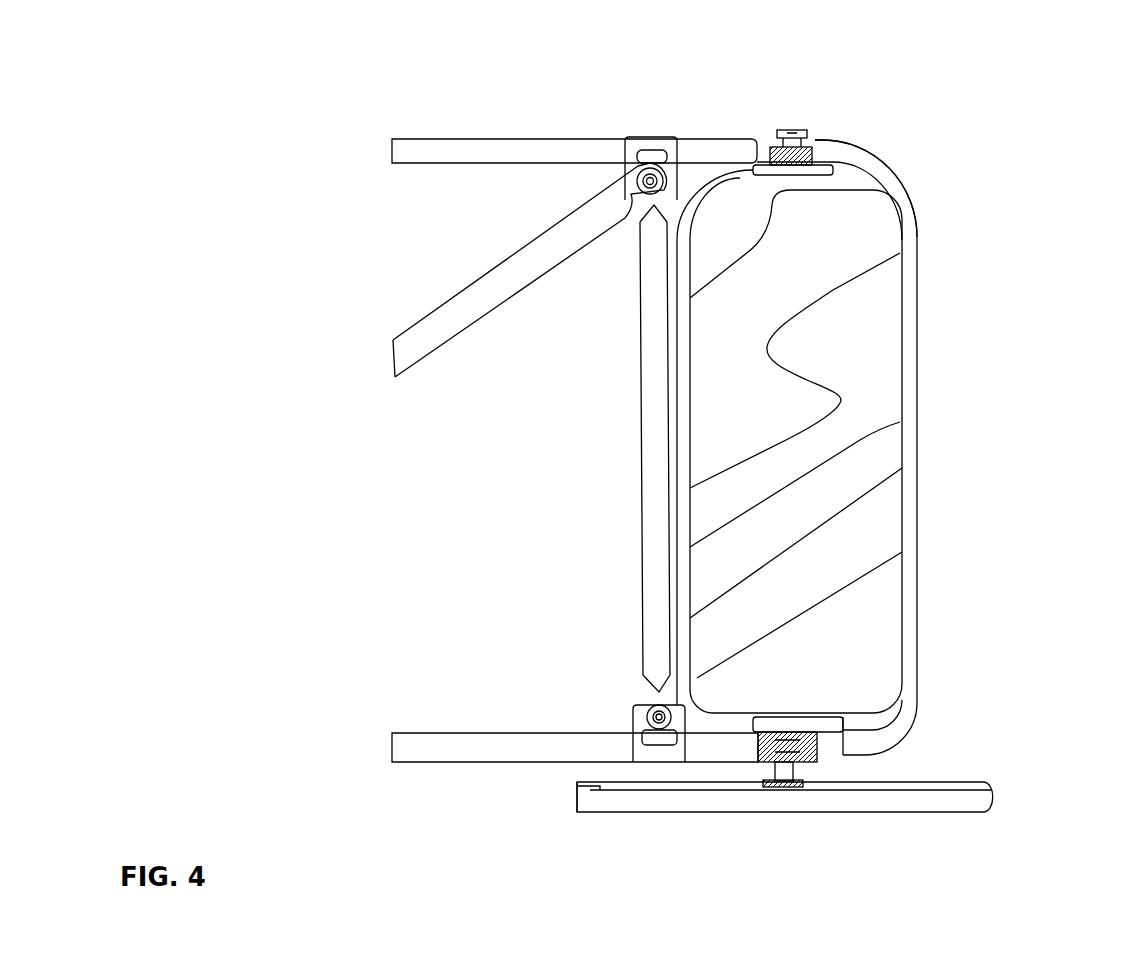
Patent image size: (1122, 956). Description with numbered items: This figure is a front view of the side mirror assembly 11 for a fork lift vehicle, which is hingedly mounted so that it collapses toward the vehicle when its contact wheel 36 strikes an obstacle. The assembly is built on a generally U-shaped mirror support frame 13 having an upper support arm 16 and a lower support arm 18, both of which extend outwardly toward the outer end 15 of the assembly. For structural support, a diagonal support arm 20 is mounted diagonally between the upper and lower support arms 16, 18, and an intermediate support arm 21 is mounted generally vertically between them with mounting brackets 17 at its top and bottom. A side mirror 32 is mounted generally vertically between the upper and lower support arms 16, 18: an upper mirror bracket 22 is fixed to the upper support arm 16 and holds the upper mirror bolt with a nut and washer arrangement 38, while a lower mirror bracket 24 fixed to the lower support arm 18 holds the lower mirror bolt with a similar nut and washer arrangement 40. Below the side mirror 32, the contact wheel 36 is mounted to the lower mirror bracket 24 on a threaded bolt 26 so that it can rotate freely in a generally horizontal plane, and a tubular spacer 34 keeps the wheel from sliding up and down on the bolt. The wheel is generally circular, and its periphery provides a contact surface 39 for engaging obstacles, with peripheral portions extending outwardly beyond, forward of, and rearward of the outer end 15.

The side mirror assembly 11 is at (488, 118).
The mirror support frame 13 is at (890, 155).
The outer end 15 is at (716, 112).
The upper support arm 16 is at (500, 152).
The mounting brackets 17 is at (643, 138).
The lower support arm 18 is at (555, 743).
The diagonal support arm 20 is at (448, 328).
The intermediate support arm 21 is at (651, 473).
The upper mirror bracket 22 is at (770, 143).
The lower mirror bracket 24 is at (753, 757).
The threaded bolt 26 is at (773, 815).
The side mirror 32 is at (878, 378).
The tubular spacer 34 is at (783, 773).
The contact wheel 36 is at (995, 804).
The nut and washer arrangement 38 is at (830, 136).
The contact surface 39 is at (590, 798).
The nut and washer arrangement 40 is at (843, 740).